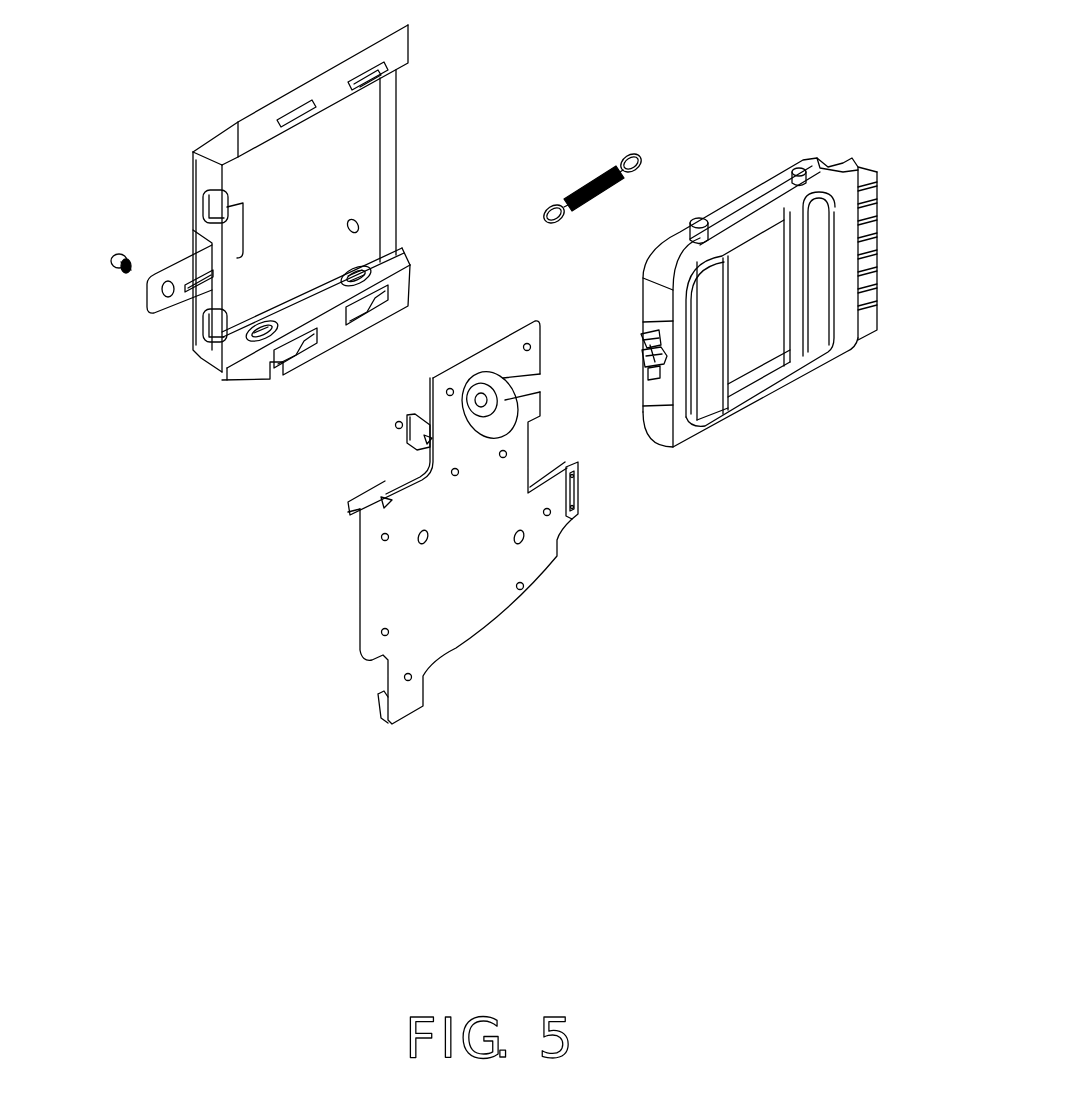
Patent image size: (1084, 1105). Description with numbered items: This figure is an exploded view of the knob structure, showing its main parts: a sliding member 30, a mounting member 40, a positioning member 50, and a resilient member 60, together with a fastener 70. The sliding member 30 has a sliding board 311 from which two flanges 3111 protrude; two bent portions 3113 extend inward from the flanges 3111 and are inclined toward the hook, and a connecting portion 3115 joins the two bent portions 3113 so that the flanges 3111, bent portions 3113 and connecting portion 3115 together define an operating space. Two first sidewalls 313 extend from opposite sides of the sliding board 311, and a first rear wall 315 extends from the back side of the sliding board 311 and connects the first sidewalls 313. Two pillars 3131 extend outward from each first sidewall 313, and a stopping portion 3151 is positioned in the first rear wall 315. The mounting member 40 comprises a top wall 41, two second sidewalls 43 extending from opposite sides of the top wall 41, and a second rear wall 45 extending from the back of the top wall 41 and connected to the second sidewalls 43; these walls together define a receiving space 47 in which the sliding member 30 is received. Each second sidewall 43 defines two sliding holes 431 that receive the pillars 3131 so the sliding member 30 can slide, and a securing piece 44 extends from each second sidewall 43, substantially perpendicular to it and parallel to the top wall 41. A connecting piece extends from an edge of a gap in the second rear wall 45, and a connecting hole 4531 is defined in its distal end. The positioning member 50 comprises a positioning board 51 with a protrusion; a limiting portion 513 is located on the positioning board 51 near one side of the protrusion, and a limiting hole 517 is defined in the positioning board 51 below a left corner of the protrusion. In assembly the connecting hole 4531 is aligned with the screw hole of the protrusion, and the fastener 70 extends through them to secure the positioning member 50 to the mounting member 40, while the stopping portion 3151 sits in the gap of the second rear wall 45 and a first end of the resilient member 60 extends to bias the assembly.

The sliding member 30 is at (697, 475).
The sliding board 311 is at (838, 188).
The flanges 3111 is at (820, 312).
The bent portions 3113 is at (788, 327).
The connecting portion 3115 is at (735, 347).
The first sidewalls 313 is at (752, 202).
The pillars 3131 is at (699, 218).
The first rear wall 315 is at (653, 410).
The stopping portion 3151 is at (641, 346).
The mounting member 40 is at (238, 76).
The top wall 41 is at (257, 188).
The second sidewalls 43 is at (386, 263).
The sliding holes 431 is at (360, 272).
The securing pieces 44 is at (400, 290).
The second rear wall 45 is at (203, 355).
The connecting hole 4531 is at (168, 282).
The receiving space 47 is at (323, 143).
The positioning member 50 is at (318, 693).
The positioning board 51 is at (483, 593).
The limiting portion 513 is at (397, 427).
The limiting hole 517 is at (577, 507).
The resilient member 60 is at (570, 188).
The fastener 70 is at (112, 268).